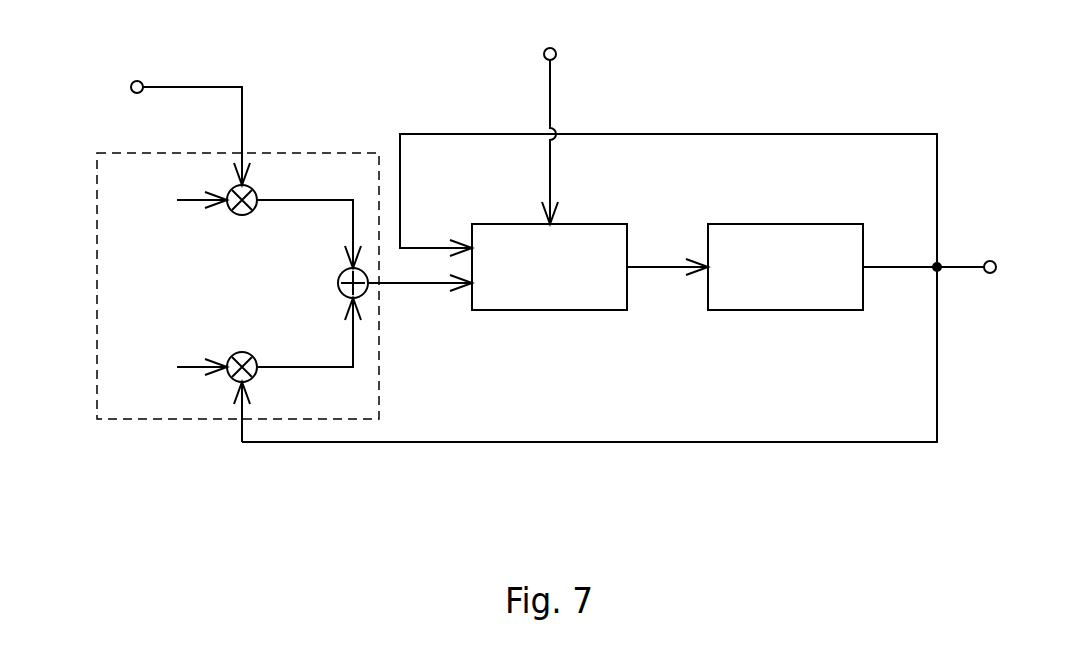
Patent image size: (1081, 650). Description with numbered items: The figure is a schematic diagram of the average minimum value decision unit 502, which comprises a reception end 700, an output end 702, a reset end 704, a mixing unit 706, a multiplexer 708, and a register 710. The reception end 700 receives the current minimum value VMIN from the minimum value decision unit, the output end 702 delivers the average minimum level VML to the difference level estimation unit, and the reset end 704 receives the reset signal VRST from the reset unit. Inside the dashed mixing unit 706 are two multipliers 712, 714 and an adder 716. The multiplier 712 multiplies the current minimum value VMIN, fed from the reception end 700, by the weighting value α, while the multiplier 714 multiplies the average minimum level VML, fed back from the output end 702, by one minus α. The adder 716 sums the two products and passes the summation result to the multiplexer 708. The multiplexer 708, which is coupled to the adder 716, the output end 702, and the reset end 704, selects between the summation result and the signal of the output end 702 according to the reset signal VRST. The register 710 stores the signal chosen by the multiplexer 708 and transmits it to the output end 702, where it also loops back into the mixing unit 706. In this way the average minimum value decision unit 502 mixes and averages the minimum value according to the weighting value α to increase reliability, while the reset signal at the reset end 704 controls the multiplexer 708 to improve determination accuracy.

The average minimum value decision unit 502 is at (913, 67).
The reception end 700 is at (137, 81).
The output end 702 is at (992, 260).
The reset end 704 is at (556, 52).
The mixing unit 706 is at (278, 153).
The multiplexer 708 is at (598, 224).
The register 710 is at (835, 224).
The multiplier 712 is at (251, 212).
The multiplier 714 is at (251, 356).
The adder 716 is at (362, 296).